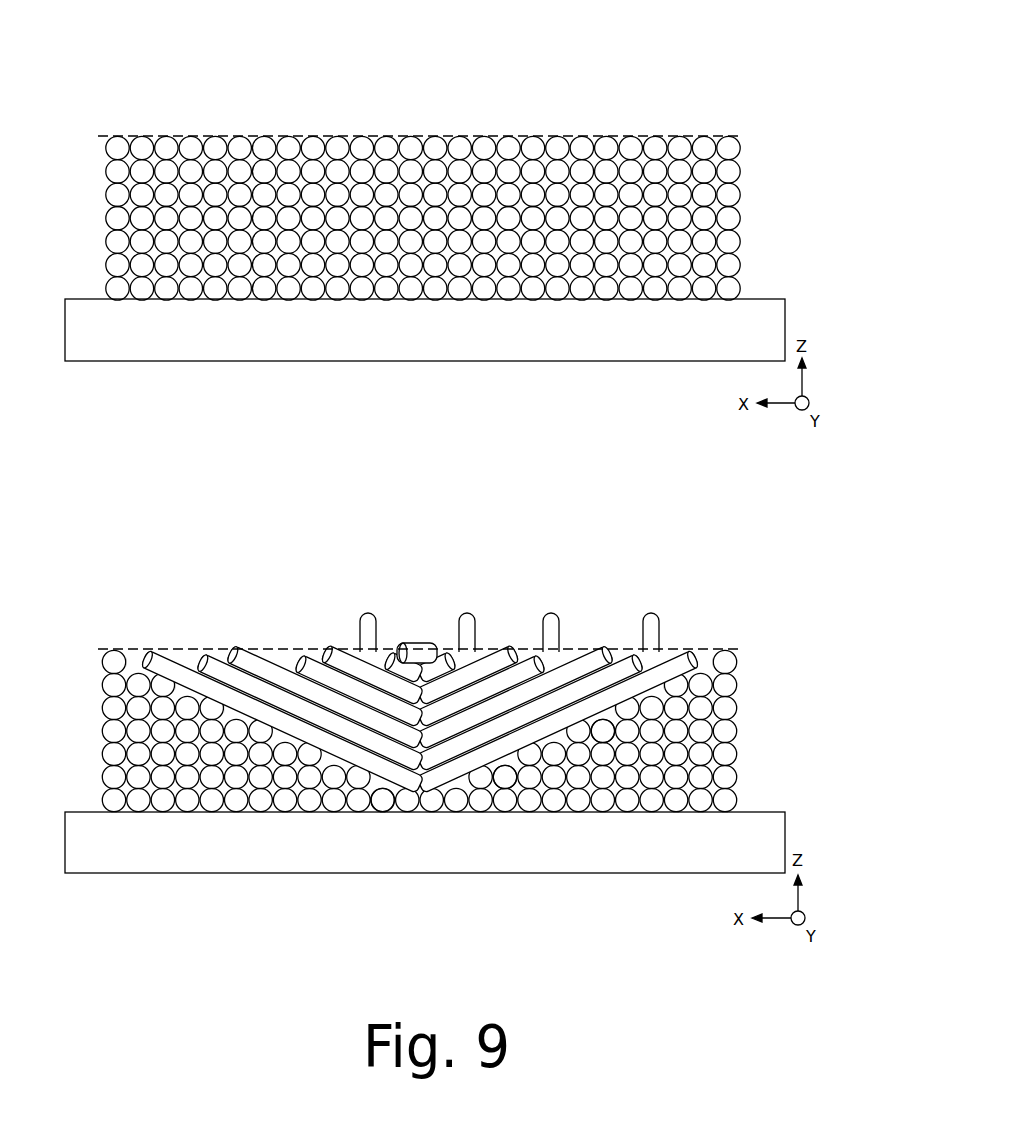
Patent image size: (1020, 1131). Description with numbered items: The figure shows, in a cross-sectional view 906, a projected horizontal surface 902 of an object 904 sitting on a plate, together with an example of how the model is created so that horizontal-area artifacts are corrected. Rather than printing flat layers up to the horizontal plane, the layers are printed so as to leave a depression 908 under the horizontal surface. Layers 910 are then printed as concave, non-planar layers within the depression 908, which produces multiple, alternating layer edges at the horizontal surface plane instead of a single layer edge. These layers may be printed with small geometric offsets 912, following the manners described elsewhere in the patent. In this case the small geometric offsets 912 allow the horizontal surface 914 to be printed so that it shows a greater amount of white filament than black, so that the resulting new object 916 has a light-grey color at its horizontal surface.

The cross-sectional view 906 is at (457, 207).
The projected horizontal surface 902 is at (738, 134).
The object 904 is at (752, 220).
The depression 908 is at (385, 792).
The layers 910 is at (128, 637).
The small geometric offsets 912 is at (510, 620).
The horizontal surface 914 is at (730, 645).
The new object 916 is at (752, 732).